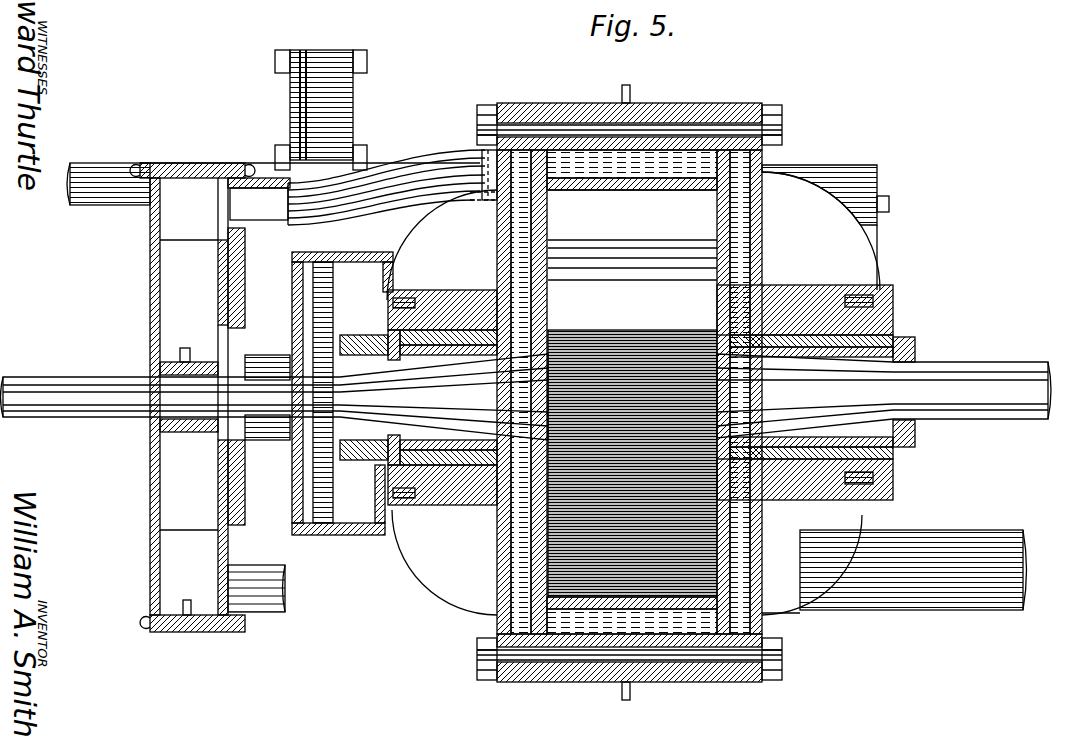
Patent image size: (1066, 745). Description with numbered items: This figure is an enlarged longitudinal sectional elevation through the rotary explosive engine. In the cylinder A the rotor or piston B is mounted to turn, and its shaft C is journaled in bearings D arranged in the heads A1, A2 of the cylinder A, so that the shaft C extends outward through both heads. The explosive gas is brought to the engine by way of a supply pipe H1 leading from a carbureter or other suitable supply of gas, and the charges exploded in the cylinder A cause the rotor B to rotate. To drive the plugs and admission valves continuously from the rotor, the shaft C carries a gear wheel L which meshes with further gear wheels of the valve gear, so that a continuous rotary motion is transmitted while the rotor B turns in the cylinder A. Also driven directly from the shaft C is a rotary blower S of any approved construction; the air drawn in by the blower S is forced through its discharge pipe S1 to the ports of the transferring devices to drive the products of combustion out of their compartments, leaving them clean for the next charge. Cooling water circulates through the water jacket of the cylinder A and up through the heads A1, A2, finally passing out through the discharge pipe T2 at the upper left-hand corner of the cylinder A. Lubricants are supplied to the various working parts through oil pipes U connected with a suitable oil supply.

The cylinder A is at (648, 200).
The head of the cylinder A1 is at (497, 556).
The head of the cylinder A2 is at (762, 243).
The rotor or piston B is at (632, 393).
The shaft C is at (118, 382).
The bearings D is at (356, 348).
The gear wheel L is at (333, 515).
The rotary blower S is at (150, 262).
The discharge pipe of the blower S1 is at (422, 165).
The discharge pipe T2 is at (118, 170).
The oil pipes U is at (622, 86).
The supply pipe H1 is at (904, 610).